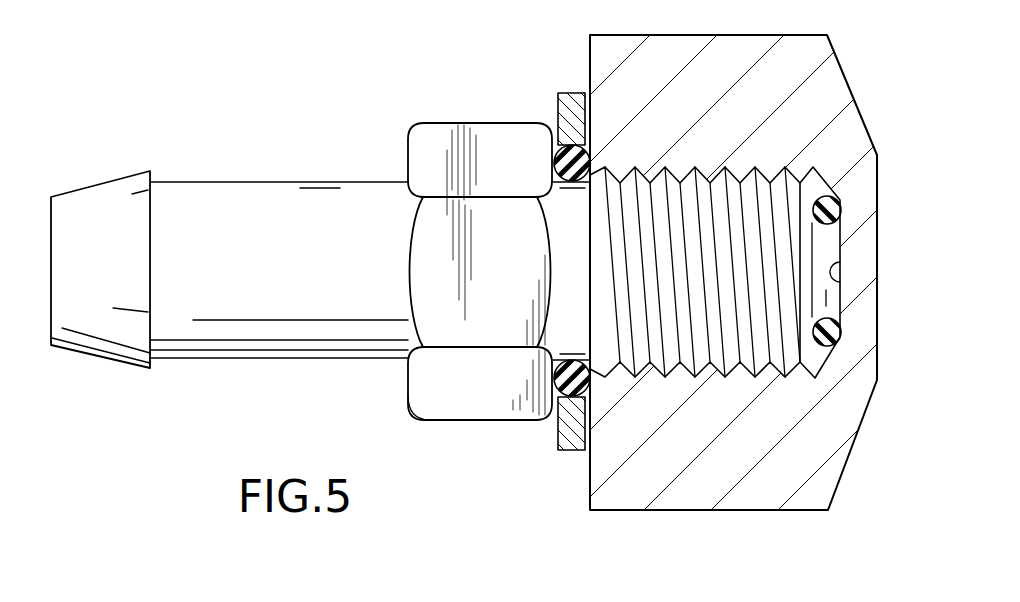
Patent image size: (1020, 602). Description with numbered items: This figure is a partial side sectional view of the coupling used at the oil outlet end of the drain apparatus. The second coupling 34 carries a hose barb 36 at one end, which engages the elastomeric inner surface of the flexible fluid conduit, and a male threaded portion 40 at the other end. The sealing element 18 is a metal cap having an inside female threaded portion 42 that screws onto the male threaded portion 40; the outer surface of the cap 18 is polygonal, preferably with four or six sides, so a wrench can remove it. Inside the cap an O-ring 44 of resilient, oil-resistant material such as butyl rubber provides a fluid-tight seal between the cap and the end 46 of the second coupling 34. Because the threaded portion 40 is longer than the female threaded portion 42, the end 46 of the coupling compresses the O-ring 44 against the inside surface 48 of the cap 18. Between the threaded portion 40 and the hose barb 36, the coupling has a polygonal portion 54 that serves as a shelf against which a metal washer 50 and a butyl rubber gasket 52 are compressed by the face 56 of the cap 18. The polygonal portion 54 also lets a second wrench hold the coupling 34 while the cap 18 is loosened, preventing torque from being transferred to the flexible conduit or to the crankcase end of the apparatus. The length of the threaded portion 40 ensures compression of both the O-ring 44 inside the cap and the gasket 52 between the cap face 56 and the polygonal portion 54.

The sealing element 18 is at (848, 87).
The second coupling 34 is at (453, 97).
The hose barb 36 is at (241, 181).
The male threaded portion 40 is at (803, 245).
The female threaded portion 42 is at (738, 376).
The O-ring 44 is at (832, 333).
The end of the second coupling 46 is at (827, 298).
The inside surface of the cap 48 is at (833, 267).
The washer 50 is at (572, 92).
The gasket 52 is at (553, 170).
The polygonal portion 54 is at (408, 393).
The face of the cap 56 is at (583, 478).